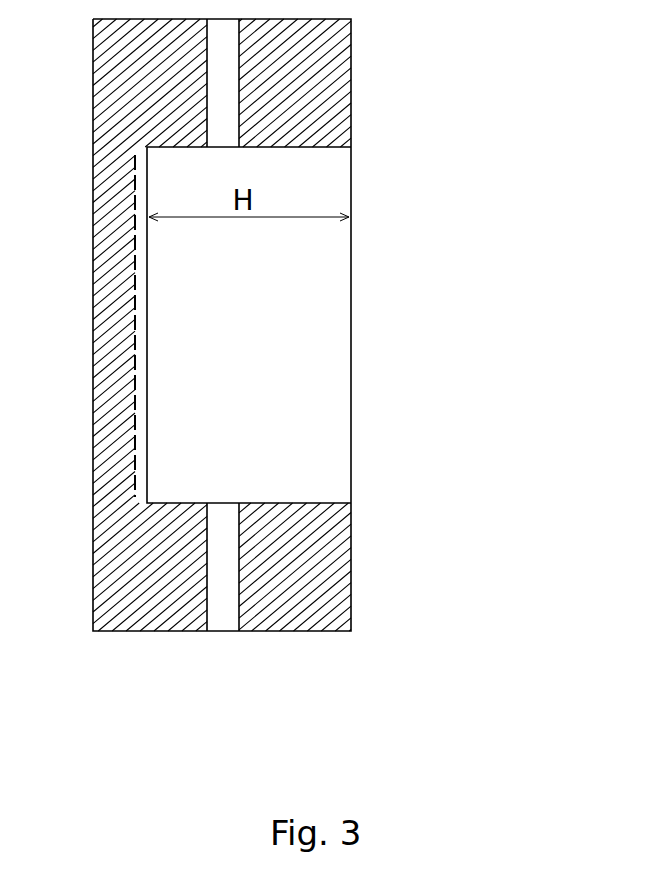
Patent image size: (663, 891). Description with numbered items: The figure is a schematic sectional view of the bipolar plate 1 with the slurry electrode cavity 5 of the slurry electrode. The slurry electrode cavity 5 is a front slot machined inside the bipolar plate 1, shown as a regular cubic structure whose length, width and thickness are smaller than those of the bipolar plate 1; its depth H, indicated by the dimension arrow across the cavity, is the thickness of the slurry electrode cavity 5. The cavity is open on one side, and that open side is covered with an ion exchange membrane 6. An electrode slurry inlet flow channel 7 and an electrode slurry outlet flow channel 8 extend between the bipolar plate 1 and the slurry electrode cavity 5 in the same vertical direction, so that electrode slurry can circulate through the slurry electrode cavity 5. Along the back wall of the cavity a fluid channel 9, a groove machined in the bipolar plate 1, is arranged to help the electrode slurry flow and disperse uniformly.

The bipolar plate 1 is at (351, 78).
The slurry electrode cavity 5 is at (249, 325).
The ion exchange membrane 6 is at (351, 292).
The electrode slurry inlet flow channel 7 is at (223, 613).
The electrode slurry outlet flow channel 8 is at (222, 137).
The fluid channel 9 is at (138, 323).